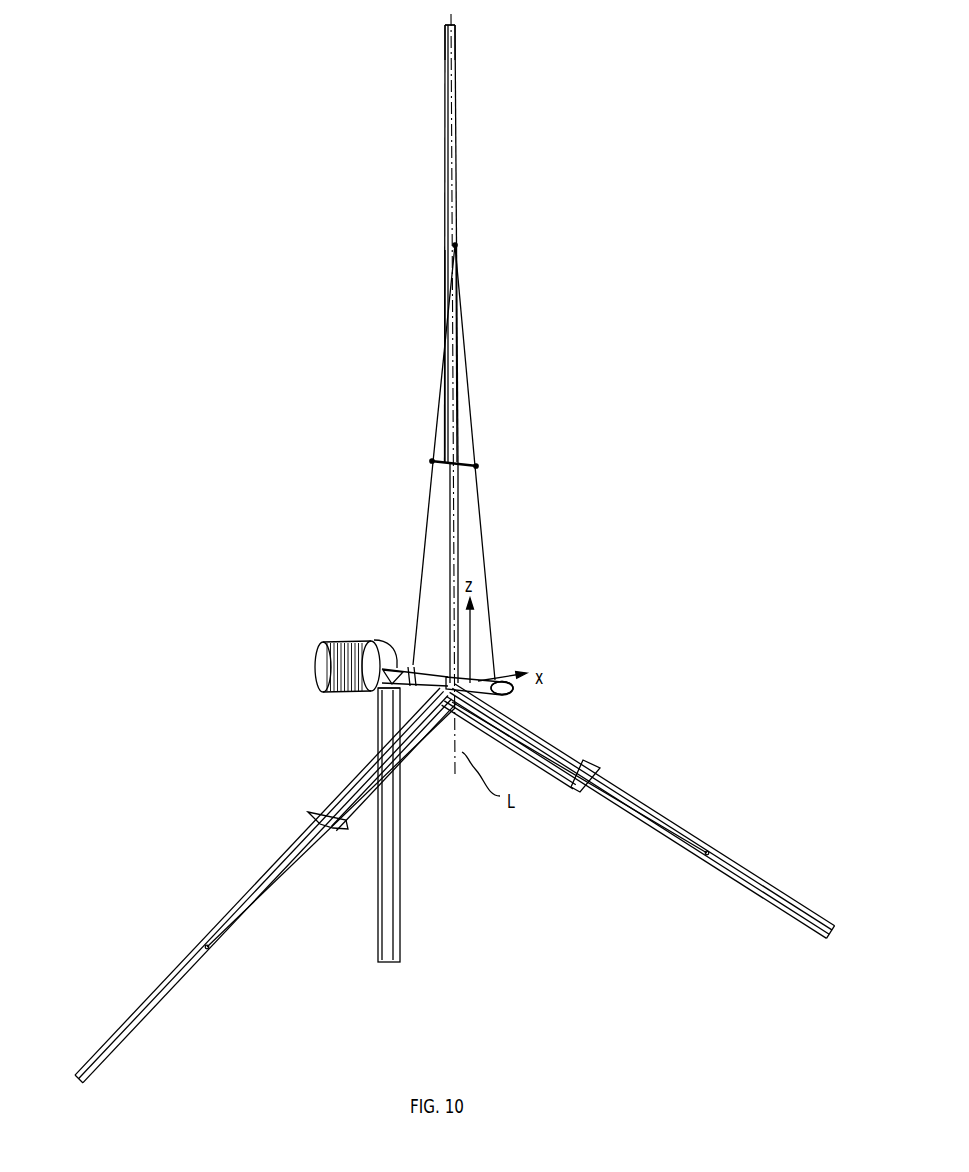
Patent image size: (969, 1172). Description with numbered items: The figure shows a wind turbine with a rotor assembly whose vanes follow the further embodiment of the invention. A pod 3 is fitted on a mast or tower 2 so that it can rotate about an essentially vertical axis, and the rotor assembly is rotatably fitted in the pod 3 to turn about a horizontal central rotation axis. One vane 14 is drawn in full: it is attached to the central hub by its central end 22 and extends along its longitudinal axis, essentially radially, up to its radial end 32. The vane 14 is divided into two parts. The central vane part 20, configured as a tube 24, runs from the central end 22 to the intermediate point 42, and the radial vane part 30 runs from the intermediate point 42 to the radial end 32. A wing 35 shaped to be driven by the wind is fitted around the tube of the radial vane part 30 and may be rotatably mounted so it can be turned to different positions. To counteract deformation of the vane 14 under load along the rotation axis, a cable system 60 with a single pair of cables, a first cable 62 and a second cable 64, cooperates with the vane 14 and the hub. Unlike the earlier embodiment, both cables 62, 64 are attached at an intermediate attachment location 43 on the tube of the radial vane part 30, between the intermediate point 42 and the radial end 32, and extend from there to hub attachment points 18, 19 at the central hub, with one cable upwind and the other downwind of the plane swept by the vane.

The mast or tower 2 is at (388, 928).
The pod 3 is at (372, 692).
The vane 14 is at (315, 395).
The hub attachment point 18 is at (411, 666).
The hub attachment point 19 is at (494, 684).
The central vane part 20 is at (395, 515).
The central end 22 is at (467, 660).
The tube 24 is at (460, 615).
The radial vane part 30 is at (415, 322).
The radial end 32 is at (458, 27).
The wing 35 is at (446, 158).
The intermediate point 42 is at (488, 466).
The intermediate attachment location 43 is at (463, 248).
The cable system 60 is at (477, 453).
The first cable 62 is at (422, 573).
The second cable 64 is at (485, 575).